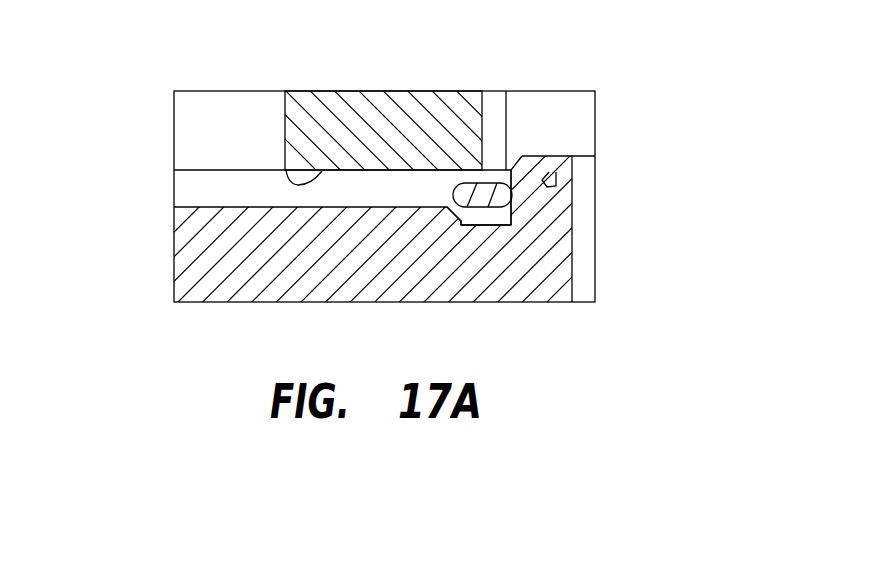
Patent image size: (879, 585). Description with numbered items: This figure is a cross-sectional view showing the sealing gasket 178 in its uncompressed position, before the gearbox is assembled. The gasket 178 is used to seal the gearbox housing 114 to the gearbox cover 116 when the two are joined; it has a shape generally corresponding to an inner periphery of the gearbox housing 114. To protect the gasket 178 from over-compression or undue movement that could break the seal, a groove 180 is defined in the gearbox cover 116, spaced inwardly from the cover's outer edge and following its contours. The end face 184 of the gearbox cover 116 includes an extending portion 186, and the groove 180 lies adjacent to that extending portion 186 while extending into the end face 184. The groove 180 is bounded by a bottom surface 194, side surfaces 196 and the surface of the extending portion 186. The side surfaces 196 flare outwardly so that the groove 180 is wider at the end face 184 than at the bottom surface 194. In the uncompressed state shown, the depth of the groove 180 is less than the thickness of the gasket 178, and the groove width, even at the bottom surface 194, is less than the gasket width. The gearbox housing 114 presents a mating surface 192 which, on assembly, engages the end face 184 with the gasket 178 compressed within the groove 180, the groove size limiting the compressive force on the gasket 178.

The gearbox housing 114 is at (412, 93).
The gearbox cover 116 is at (305, 303).
The sealing gasket 178 is at (489, 183).
The groove 180 is at (470, 227).
The end face 184 is at (208, 207).
The extending portion 186 is at (537, 190).
The mating surface 192 is at (286, 170).
The bottom surface 194 is at (513, 203).
The side surfaces 196 is at (443, 224).